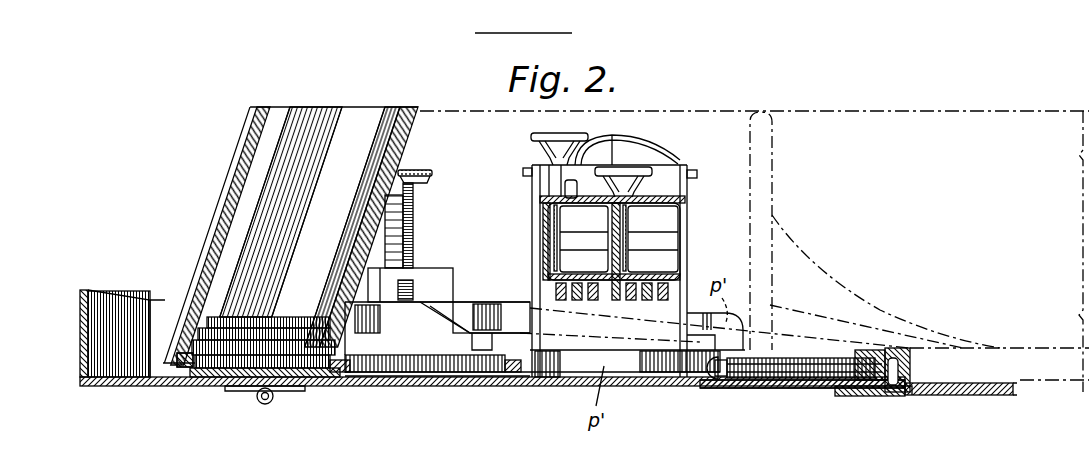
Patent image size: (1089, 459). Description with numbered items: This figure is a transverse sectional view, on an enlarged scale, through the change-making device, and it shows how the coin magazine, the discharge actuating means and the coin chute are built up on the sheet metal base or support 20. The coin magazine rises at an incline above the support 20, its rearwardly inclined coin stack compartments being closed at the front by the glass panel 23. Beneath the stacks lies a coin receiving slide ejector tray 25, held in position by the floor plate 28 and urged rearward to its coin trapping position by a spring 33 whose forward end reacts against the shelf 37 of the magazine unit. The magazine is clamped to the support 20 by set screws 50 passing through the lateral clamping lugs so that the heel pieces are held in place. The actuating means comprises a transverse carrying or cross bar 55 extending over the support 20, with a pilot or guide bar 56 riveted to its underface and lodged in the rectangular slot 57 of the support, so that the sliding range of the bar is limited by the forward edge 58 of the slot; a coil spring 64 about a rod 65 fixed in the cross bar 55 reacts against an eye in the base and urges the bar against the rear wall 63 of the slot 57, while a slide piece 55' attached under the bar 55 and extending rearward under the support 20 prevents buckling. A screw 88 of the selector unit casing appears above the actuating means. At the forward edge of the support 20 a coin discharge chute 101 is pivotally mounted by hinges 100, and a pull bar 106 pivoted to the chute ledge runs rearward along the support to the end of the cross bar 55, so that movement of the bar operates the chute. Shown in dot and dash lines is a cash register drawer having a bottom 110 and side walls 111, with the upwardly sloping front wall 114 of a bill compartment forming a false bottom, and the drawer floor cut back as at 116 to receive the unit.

The base or support plate 20 is at (641, 387).
The glass panel 23 is at (228, 213).
The coin receiving slide ejector plate or tray 25 is at (344, 372).
The floor plate 28 is at (333, 378).
The spring 33 is at (429, 373).
The shelf 37 is at (351, 352).
The set screw 50 is at (416, 242).
The transverse carrying or cross bar 55 is at (921, 370).
The slide piece 55' is at (959, 409).
The pilot or guide bar 56 is at (879, 383).
The slot 57 is at (808, 391).
The forward edge of slot 58 is at (781, 389).
The rear wall of slot 63 is at (919, 392).
The coil spring 64 is at (826, 397).
The rod 65 is at (736, 386).
The screw 88 is at (527, 249).
The hinge 100 is at (263, 404).
The coin discharge chute 101 is at (146, 388).
The pull bar 106 is at (511, 312).
The drawer bottom 110 is at (1053, 388).
The drawer side wall 111 is at (1041, 110).
The sloping front wall of bill compartment 114 is at (832, 296).
The cut-back floor portion 116 is at (915, 360).